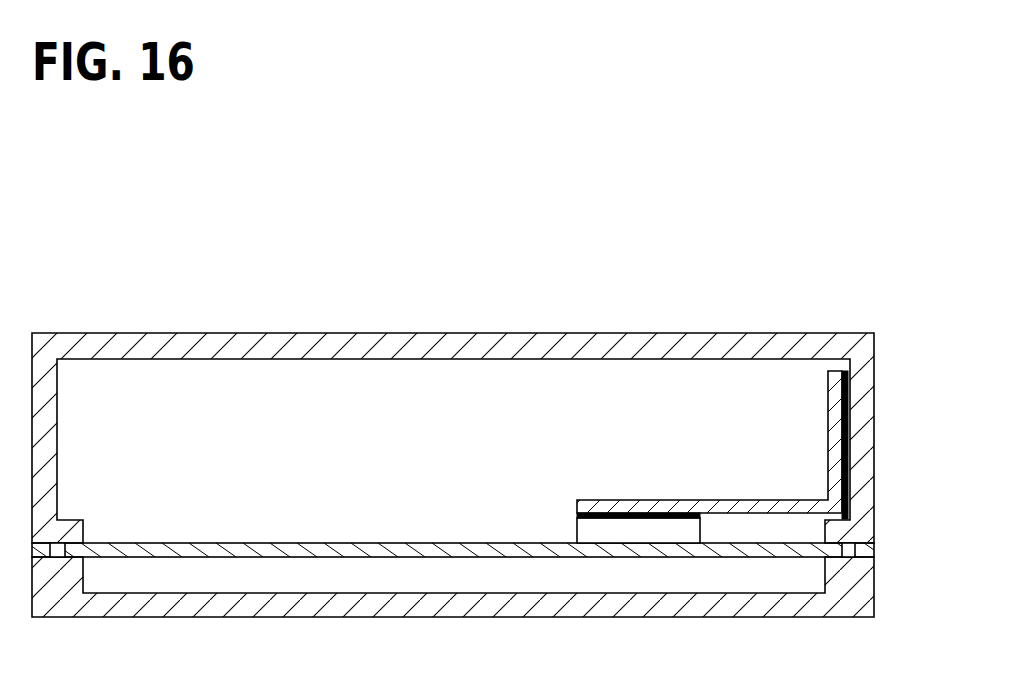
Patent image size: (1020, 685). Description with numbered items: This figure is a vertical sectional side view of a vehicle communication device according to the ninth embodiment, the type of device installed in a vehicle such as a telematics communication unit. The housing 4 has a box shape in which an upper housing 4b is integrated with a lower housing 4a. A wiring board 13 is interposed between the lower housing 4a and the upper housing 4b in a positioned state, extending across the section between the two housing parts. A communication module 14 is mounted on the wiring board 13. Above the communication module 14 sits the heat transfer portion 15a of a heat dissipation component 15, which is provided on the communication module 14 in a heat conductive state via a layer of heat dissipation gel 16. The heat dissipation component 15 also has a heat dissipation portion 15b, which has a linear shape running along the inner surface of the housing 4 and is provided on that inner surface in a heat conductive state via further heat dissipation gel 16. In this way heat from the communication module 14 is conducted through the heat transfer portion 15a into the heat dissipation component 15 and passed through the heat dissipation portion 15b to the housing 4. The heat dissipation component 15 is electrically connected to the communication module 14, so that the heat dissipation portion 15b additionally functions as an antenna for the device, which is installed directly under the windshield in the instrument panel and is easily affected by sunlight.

The housing 4 is at (486, 434).
The lower housing 4a is at (874, 588).
The upper housing 4b is at (874, 445).
The wiring board 13 is at (297, 543).
The communication module 14 is at (577, 530).
The heat dissipation component 15 is at (709, 442).
The heat transfer portion 15a is at (760, 500).
The heat dissipation portion 15b is at (828, 385).
The heat dissipation gel 16 is at (577, 515).